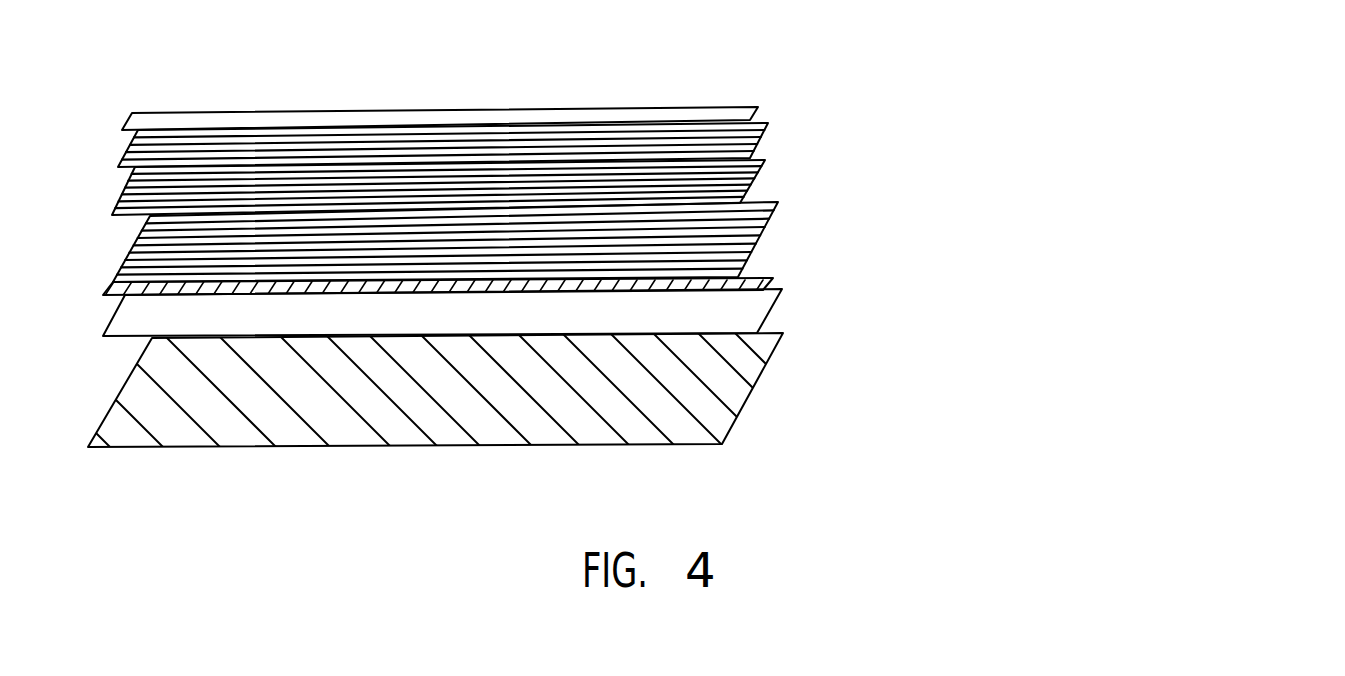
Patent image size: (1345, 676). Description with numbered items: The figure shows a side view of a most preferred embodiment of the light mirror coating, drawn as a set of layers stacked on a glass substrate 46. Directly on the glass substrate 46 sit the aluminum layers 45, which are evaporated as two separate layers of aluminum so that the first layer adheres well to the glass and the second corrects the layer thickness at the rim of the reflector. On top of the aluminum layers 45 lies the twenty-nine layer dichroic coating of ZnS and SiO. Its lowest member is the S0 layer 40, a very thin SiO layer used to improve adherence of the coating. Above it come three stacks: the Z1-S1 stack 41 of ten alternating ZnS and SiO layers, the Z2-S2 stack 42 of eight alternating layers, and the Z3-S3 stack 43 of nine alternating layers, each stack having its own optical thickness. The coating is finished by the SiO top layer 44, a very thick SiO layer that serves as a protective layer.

The SiO top layer 44 is at (776, 108).
The Z3-S3 stack 43 is at (780, 139).
The Z2-S2 stack 42 is at (787, 180).
The Z1-S1 stack 41 is at (780, 239).
The S0 layer 40 is at (805, 280).
The aluminum layers 45 is at (792, 310).
The glass substrate 46 is at (795, 393).